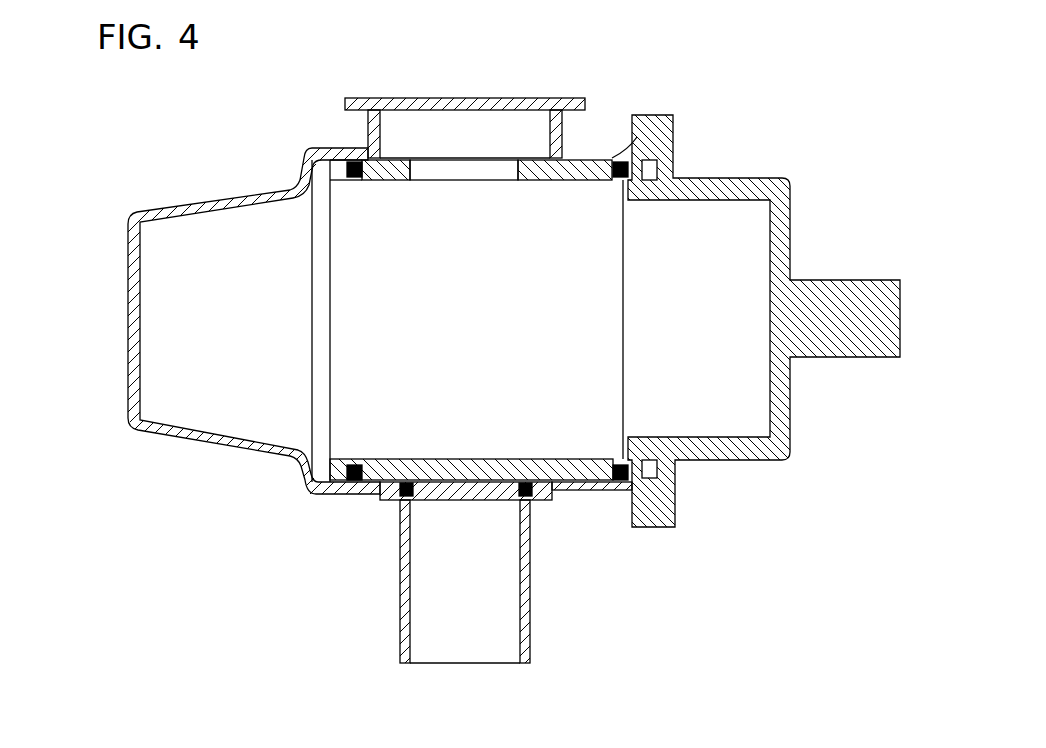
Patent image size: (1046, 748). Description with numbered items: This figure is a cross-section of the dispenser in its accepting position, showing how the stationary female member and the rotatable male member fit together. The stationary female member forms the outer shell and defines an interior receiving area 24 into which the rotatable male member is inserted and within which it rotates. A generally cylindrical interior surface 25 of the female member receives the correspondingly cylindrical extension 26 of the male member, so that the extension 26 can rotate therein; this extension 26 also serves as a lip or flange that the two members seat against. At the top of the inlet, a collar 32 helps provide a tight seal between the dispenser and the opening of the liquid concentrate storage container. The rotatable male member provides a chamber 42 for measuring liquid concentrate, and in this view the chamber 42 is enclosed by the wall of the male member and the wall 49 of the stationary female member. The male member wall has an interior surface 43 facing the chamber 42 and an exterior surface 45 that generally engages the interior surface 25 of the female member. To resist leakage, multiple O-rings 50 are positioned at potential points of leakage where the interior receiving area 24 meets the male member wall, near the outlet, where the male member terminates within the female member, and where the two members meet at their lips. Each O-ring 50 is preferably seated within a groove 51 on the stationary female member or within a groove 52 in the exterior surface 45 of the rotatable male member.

The interior receiving area 24 is at (556, 228).
The interior surface 25 is at (566, 484).
The extension 26 is at (392, 180).
The collar 32 is at (345, 103).
The chamber 42 is at (263, 400).
The interior surface 43 is at (442, 468).
The exterior surface 45 is at (523, 160).
The wall 49 is at (124, 289).
The O-rings 50 is at (620, 166).
The groove 51 is at (402, 488).
The groove 52 is at (355, 470).